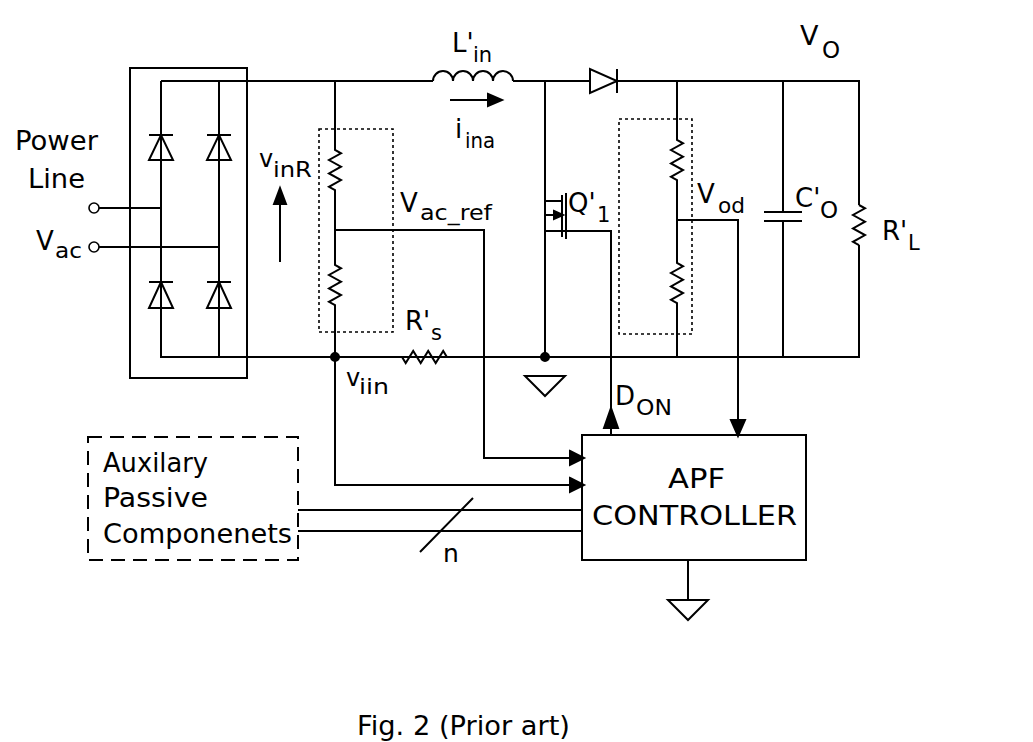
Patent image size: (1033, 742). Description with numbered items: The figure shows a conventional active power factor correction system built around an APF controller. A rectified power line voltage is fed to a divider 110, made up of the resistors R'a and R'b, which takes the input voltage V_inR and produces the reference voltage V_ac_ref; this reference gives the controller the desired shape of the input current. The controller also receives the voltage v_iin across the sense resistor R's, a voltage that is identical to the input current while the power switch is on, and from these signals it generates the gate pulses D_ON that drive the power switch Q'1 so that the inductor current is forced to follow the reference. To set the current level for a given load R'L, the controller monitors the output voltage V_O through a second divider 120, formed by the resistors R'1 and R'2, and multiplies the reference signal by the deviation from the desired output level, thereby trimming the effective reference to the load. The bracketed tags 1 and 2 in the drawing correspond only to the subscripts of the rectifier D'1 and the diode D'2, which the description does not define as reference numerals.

The divider 110 is at (372, 128).
The divider 120 is at (649, 118).
The rectifier bridge D' 1 is at (212, 246).
The boost diode D' 2 is at (601, 60).